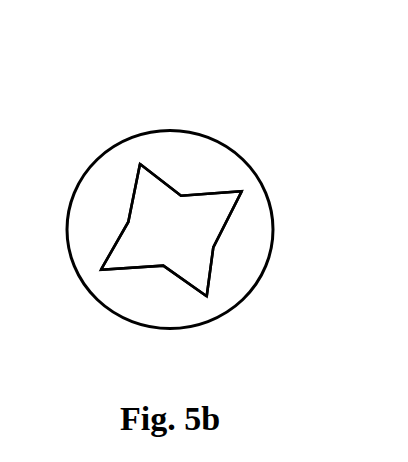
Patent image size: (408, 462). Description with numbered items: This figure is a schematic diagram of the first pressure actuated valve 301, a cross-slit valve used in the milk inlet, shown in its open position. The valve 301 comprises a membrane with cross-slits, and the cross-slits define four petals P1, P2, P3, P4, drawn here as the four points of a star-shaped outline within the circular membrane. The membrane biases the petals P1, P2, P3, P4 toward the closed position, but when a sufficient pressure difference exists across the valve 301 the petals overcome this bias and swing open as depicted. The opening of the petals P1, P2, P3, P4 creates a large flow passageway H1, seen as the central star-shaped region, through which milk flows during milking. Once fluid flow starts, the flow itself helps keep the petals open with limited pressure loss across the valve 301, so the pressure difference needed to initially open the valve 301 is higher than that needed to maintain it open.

The first pressure actuated valve 301 is at (92, 165).
The flow passageway H1 is at (171, 230).
The petal P1 is at (191, 180).
The petal P2 is at (227, 243).
The petal P3 is at (154, 281).
The petal P4 is at (119, 217).